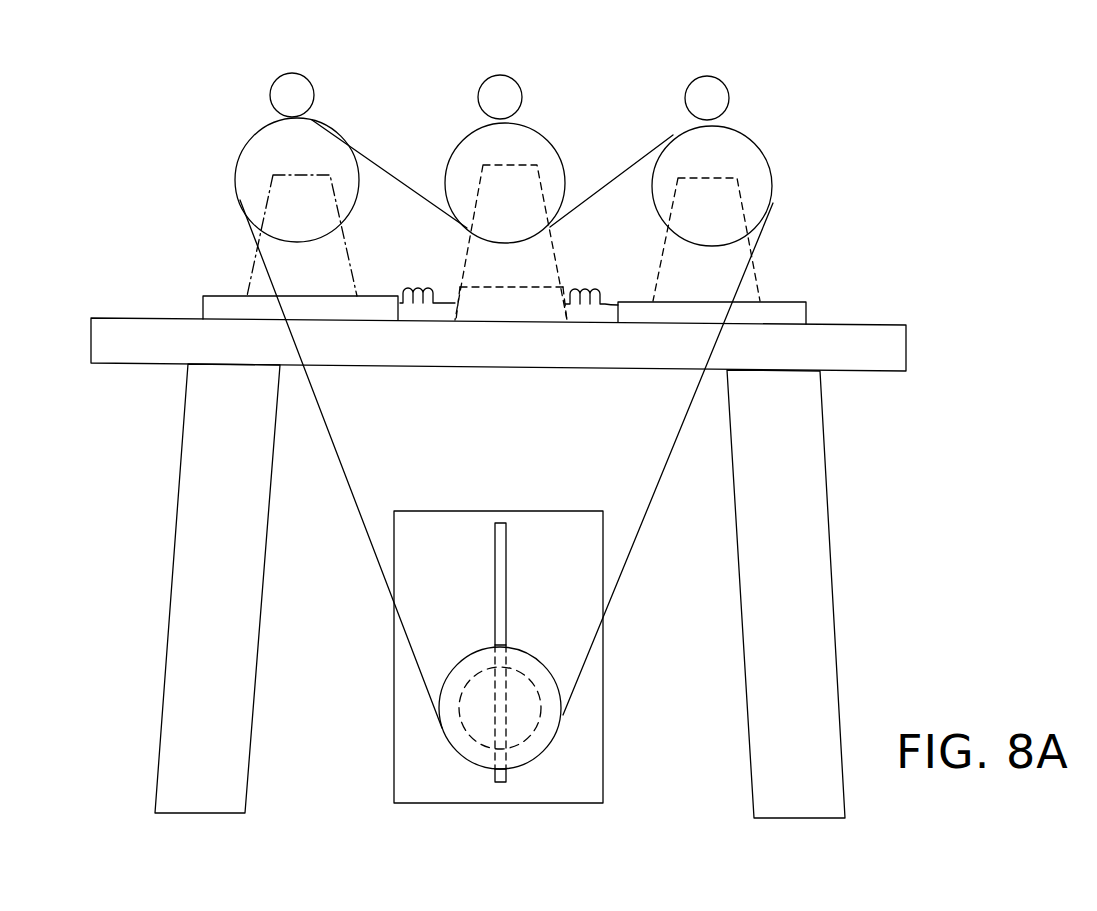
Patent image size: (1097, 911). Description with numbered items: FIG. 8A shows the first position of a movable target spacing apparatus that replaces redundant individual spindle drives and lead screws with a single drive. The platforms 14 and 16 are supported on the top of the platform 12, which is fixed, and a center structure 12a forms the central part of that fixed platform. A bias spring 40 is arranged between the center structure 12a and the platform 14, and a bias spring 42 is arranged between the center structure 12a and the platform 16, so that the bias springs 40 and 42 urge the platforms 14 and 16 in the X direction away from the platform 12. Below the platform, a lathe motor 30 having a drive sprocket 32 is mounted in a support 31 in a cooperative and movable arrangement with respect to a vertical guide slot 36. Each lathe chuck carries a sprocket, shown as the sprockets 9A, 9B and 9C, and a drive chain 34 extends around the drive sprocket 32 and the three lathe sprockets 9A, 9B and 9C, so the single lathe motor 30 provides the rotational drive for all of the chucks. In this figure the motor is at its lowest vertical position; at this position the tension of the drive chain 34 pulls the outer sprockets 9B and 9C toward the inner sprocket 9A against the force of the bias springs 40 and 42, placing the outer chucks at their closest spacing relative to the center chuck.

The lathe sprocket 9A is at (541, 131).
The lathe sprocket 9B is at (253, 137).
The lathe sprocket 9C is at (762, 148).
The platform 12 is at (887, 324).
The center structure 12a is at (537, 307).
The platform 14 is at (217, 296).
The platform 16 is at (778, 302).
The lathe motor 30 is at (476, 752).
The support 31 is at (605, 717).
The drive sprocket 32 is at (535, 762).
The drive chain 34 is at (665, 472).
The vertical guide slot 36 is at (502, 563).
The bias spring 40 is at (413, 290).
The bias spring 42 is at (593, 293).